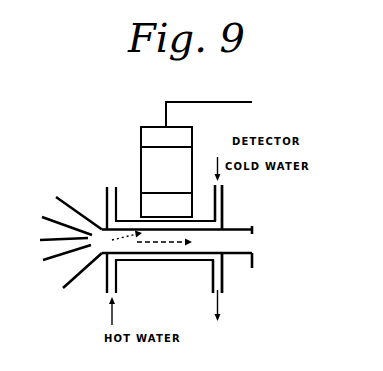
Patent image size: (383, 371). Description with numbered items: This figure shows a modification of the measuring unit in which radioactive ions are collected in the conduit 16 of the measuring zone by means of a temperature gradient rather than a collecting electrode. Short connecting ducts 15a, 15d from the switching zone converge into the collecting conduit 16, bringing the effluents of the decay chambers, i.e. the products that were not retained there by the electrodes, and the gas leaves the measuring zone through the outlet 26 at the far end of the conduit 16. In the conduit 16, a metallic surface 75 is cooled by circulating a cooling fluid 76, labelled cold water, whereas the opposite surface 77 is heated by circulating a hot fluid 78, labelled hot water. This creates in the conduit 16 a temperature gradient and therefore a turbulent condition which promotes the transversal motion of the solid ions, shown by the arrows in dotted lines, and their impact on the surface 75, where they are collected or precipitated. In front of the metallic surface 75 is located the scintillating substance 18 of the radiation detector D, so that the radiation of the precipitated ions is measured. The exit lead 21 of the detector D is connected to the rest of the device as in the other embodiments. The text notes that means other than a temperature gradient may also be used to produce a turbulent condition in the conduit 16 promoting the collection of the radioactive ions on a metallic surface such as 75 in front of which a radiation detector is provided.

The connecting duct 15a is at (61, 199).
The connecting duct 15d is at (69, 283).
The collecting conduit 16 is at (130, 246).
The scintillating substance 18 is at (186, 203).
The exit lead 21 is at (224, 99).
The outlet pipe 26 is at (244, 228).
The metallic surface 75 is at (168, 228).
The cooling fluid 76 is at (132, 227).
The opposite surface 77 is at (187, 252).
The hot fluid 78 is at (150, 254).
The radiation detector D is at (184, 169).